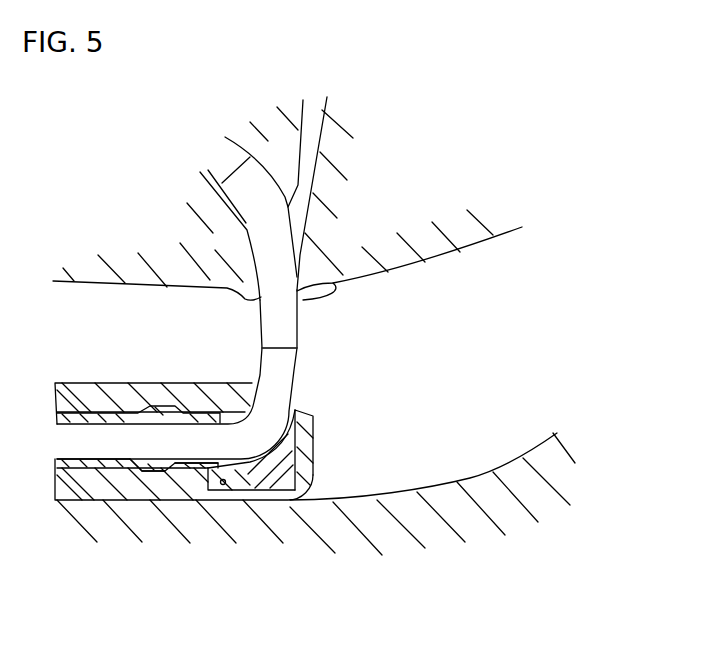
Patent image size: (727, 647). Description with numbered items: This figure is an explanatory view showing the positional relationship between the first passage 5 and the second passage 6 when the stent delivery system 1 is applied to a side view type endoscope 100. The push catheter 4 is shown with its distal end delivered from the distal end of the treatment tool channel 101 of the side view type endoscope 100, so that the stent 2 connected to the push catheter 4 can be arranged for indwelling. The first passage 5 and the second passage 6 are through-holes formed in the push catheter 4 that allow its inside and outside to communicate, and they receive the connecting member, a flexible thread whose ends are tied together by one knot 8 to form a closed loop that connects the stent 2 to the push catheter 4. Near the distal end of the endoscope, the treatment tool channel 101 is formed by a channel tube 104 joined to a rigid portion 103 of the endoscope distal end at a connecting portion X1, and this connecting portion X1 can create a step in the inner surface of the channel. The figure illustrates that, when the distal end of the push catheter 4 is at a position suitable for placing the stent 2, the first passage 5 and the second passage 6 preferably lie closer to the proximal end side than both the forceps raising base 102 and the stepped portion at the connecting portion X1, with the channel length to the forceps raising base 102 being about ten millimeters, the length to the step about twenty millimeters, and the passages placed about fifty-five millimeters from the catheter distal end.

The stent delivery system 1 is at (326, 306).
The stent 2 is at (300, 328).
The push catheter 4 is at (283, 370).
The first passage 5 is at (103, 458).
The second passage 6 is at (103, 458).
The knot 8 is at (93, 466).
The side view type endoscope 100 is at (307, 470).
The treatment tool channel 101 is at (295, 410).
The forceps raising base 102 is at (251, 482).
The rigid portion 103 is at (196, 466).
The channel tube 104 is at (128, 468).
The connecting portion X1 is at (178, 482).